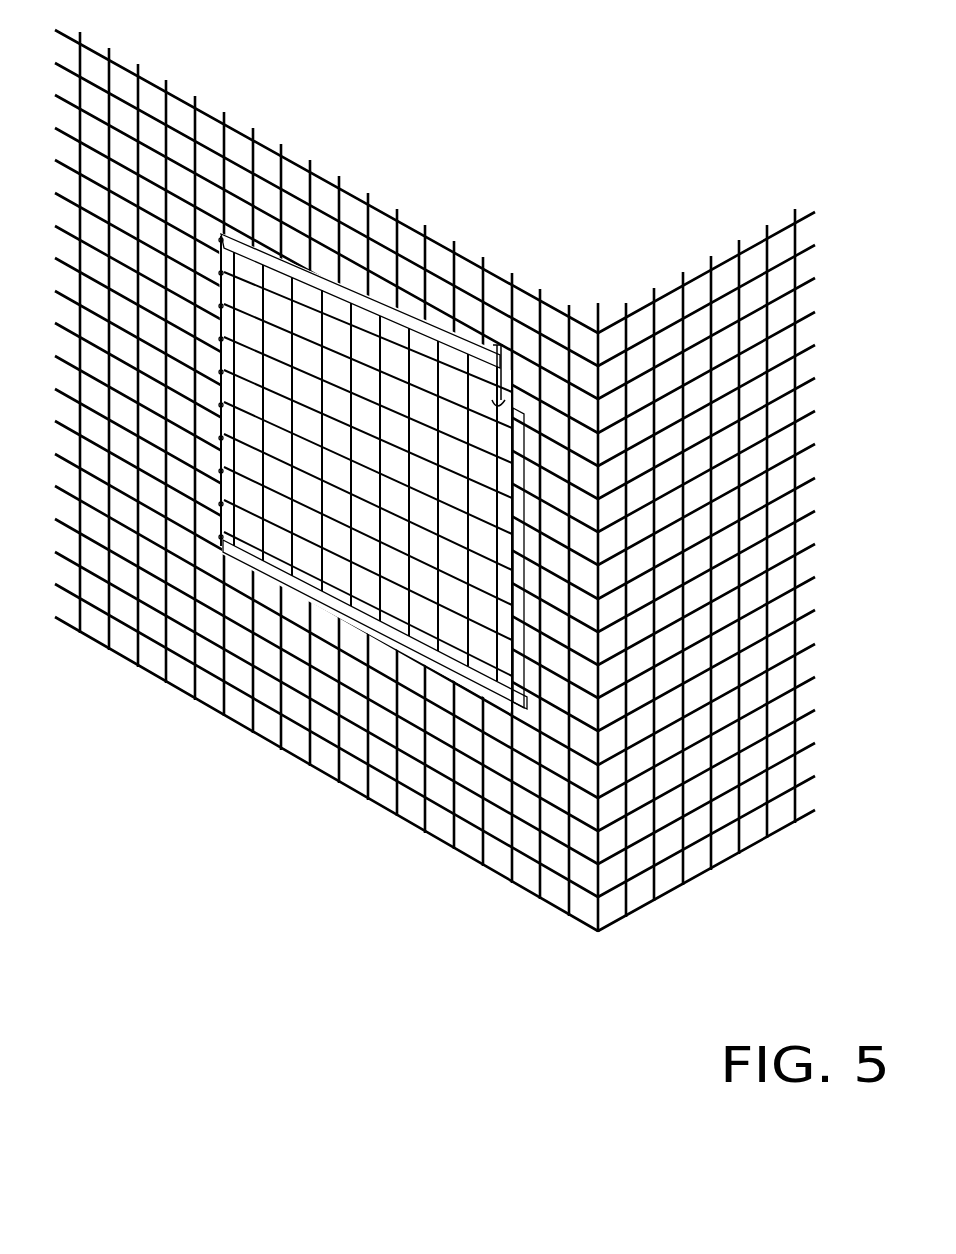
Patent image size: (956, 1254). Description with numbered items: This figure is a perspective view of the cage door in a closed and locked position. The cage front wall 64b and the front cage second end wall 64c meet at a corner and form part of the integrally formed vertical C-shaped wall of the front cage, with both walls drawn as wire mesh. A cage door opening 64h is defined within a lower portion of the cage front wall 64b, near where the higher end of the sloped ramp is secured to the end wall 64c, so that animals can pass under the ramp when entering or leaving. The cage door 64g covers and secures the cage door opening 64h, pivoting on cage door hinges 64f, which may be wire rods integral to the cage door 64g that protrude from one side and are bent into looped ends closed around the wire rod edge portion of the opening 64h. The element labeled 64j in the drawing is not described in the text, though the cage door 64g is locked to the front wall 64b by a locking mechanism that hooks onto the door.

The cage front wall 64b is at (123, 593).
The front cage second end wall 64c is at (745, 770).
The cage door hinges 64f is at (237, 628).
The cage door 64g is at (345, 378).
The cage door opening 64h is at (410, 662).
The latch 64j is at (498, 395).